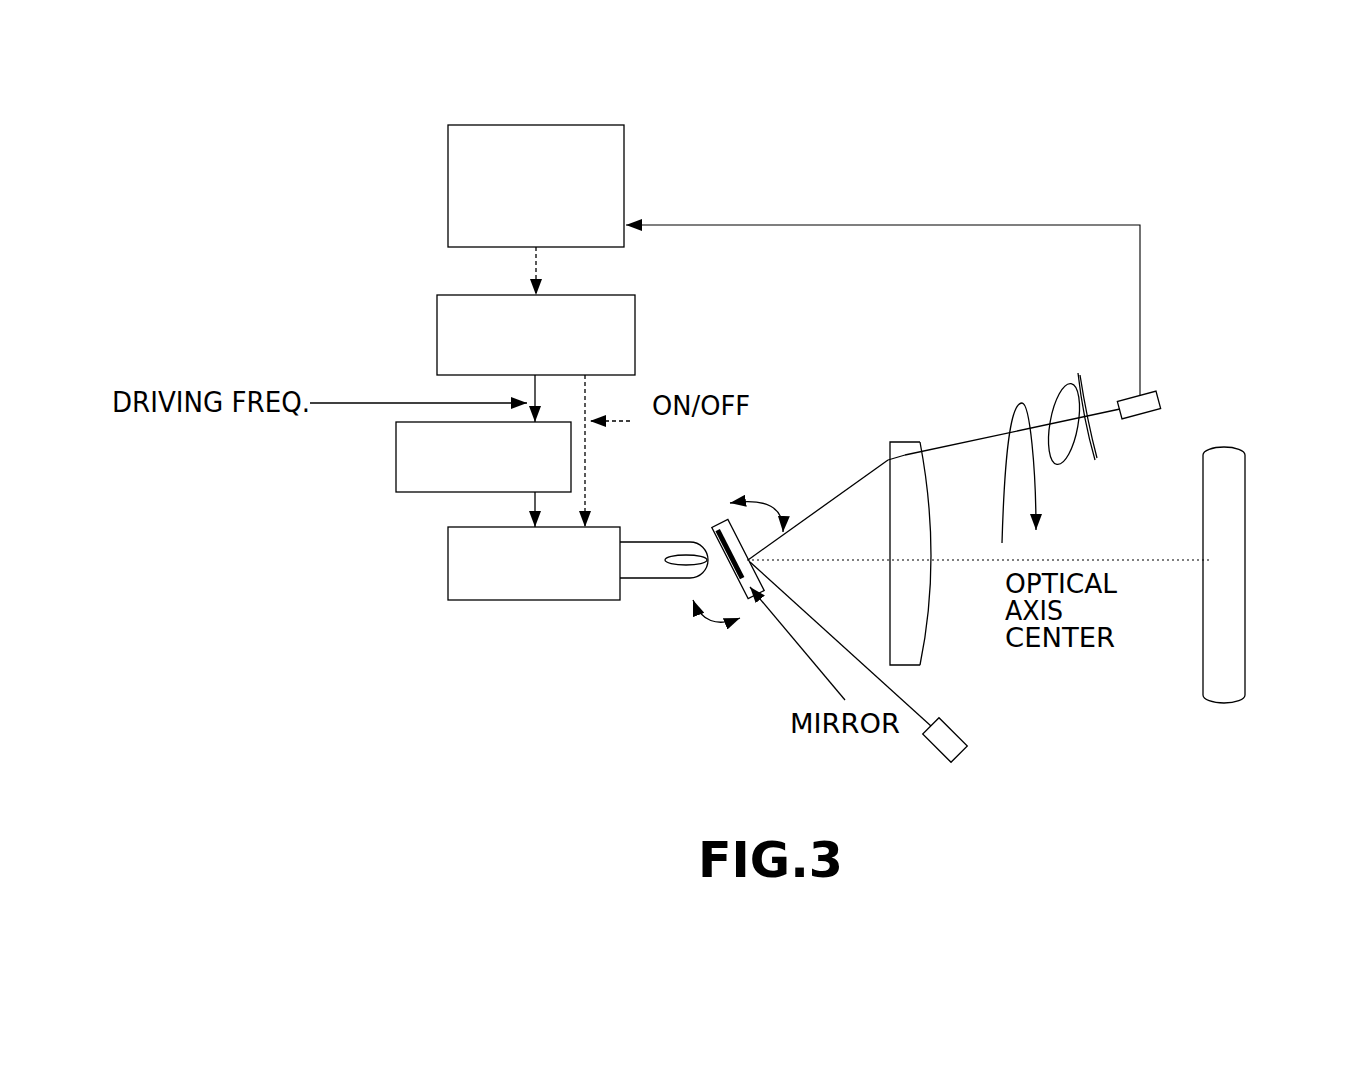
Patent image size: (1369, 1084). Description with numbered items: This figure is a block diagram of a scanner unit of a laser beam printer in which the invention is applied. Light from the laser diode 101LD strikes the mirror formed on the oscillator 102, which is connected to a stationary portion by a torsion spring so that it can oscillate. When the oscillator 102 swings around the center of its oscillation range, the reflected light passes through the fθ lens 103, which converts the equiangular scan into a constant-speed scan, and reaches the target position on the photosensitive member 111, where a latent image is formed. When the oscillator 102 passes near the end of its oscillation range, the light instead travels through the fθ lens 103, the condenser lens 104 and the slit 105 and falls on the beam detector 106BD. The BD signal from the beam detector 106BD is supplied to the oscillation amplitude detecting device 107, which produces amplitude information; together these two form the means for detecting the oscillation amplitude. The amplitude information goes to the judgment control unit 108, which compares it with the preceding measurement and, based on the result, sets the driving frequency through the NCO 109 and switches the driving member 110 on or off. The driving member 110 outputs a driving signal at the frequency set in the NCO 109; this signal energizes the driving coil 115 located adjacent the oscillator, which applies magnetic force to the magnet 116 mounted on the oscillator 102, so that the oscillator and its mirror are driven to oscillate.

The laser diode 101LD is at (987, 743).
The oscillator 102 is at (716, 588).
The fθ lens 103 is at (906, 534).
The condenser lens 104 is at (1052, 388).
The slit 105 is at (1078, 370).
The beam detector 106BD is at (1163, 413).
The oscillation amplitude detecting device 107 is at (510, 182).
The judgment control unit 108 is at (510, 330).
The NCO (numerical control oscillator) 109 is at (454, 457).
The driving member 110 is at (506, 563).
The photosensitive member 111 is at (1230, 538).
The driving coil 115 is at (670, 582).
The magnet 116 is at (723, 542).